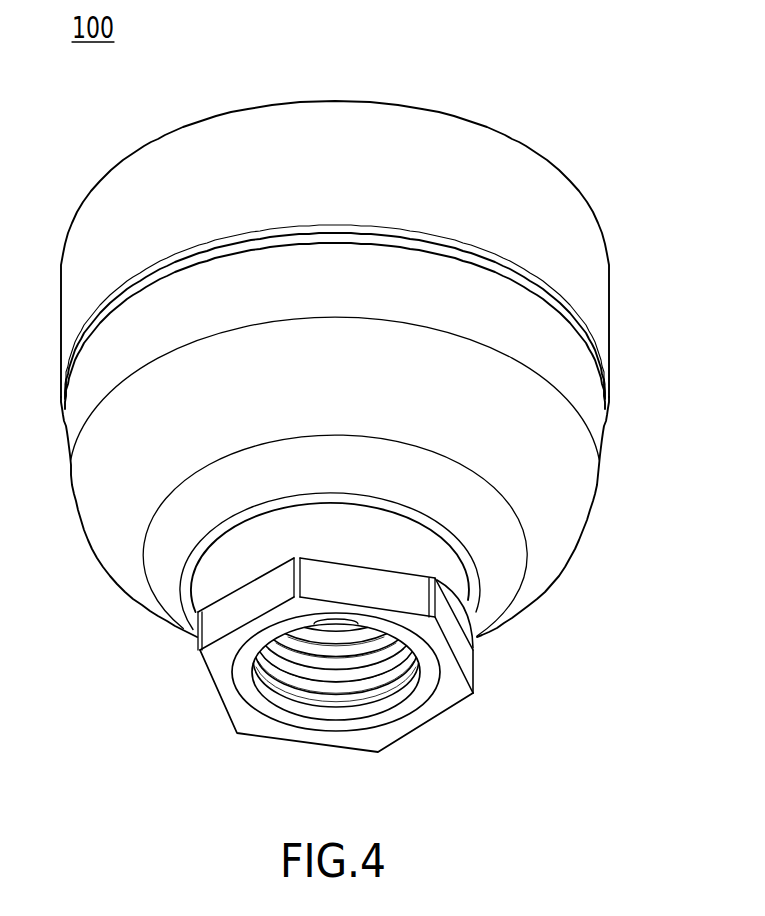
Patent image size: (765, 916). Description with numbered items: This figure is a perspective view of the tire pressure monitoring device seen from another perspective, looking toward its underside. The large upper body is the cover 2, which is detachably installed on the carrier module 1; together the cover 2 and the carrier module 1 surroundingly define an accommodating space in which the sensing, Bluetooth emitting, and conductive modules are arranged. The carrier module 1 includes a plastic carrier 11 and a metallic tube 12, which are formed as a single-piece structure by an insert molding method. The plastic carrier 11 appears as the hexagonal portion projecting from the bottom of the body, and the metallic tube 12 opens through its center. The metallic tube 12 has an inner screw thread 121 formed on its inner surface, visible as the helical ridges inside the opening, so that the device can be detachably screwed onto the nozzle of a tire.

The carrier module 1 is at (586, 573).
The cover 2 is at (550, 144).
The plastic carrier 11 is at (220, 661).
The metallic tube 12 is at (252, 693).
The inner screw thread 121 is at (377, 697).